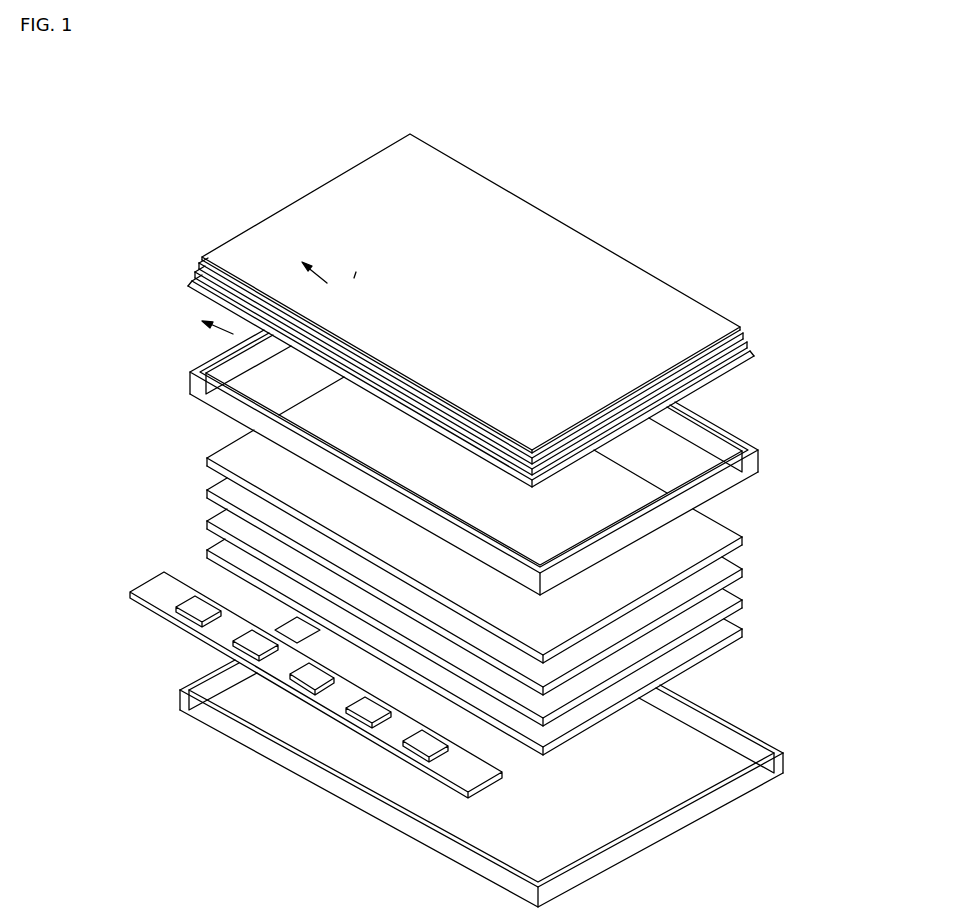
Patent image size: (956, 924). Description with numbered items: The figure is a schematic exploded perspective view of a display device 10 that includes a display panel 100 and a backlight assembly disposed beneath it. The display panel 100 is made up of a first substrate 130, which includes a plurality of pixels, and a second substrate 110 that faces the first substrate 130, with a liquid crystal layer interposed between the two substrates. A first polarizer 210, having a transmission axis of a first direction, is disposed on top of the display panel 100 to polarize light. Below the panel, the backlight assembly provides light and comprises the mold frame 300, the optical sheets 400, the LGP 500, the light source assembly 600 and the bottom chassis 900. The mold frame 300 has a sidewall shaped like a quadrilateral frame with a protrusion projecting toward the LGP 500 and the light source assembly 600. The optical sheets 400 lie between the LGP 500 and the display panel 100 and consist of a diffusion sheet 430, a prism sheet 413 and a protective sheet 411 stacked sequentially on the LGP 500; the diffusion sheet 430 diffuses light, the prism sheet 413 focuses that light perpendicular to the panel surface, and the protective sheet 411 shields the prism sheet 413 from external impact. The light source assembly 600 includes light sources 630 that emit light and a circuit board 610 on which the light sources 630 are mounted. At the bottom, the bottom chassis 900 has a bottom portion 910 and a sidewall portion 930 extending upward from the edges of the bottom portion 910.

The display device 10 is at (296, 147).
The display panel 100 is at (836, 333).
The second substrate 110 is at (744, 333).
The first substrate 130 is at (752, 346).
The first polarizer 210 is at (693, 306).
The mold frame 300 is at (745, 441).
The optical sheets 400 is at (802, 520).
The protective sheet 411 is at (742, 537).
The prism sheet 413 is at (742, 570).
The diffusion sheet 430 is at (745, 596).
The LGP 500 is at (742, 630).
The light source assembly 600 is at (163, 510).
The circuit board 610 is at (164, 588).
The light sources 630 is at (200, 603).
The bottom chassis 900 is at (761, 848).
The bottom portion 910 is at (645, 796).
The sidewall portion 930 is at (650, 843).